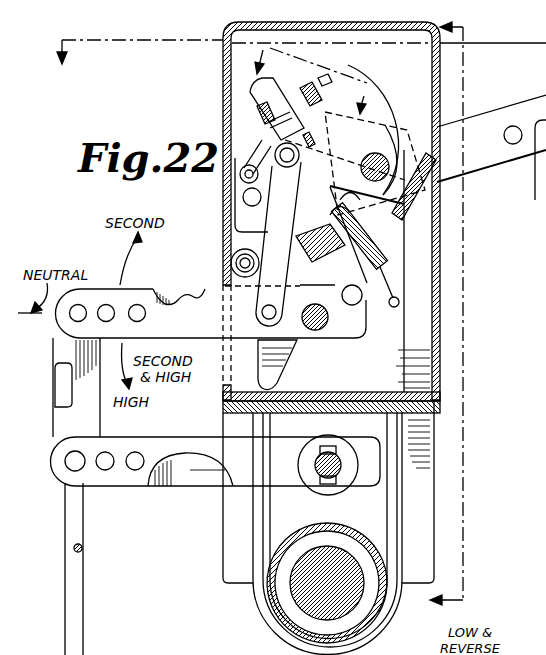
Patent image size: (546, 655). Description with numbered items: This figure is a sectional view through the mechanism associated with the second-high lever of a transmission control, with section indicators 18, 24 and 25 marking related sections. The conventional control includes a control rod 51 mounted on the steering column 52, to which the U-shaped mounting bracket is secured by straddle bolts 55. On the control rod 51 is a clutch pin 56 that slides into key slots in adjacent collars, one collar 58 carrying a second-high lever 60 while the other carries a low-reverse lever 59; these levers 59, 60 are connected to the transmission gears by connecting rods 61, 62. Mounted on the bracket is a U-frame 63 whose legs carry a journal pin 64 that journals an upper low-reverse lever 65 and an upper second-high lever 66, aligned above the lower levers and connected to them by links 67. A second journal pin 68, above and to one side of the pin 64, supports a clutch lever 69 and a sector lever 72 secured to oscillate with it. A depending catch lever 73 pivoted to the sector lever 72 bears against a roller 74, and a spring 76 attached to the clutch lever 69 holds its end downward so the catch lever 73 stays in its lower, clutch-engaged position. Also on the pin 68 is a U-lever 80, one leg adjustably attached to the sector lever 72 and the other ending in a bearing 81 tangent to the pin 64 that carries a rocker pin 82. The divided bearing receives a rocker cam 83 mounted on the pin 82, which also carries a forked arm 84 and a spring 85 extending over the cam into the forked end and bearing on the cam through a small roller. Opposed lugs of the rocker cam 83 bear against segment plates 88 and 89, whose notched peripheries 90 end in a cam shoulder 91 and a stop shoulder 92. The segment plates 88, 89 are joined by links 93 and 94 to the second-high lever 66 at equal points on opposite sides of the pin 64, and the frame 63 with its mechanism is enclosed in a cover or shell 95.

The section line 18 is at (465, 316).
The section line 24 is at (134, 66).
The section line 25 is at (317, 79).
The control rod 51 is at (338, 468).
The steering column 52 is at (267, 598).
The straddle bolts 55 is at (400, 492).
The clutch pin 56 is at (327, 483).
The collar 58 is at (357, 432).
The low-reverse lever 59 is at (200, 478).
The second-high lever 60 is at (205, 440).
The connecting rod 61 is at (78, 576).
The connecting rod 62 is at (76, 524).
The U-frame 63 is at (390, 364).
The journal pin 64 is at (317, 327).
The low-reverse lever 65 is at (173, 294).
The second-high lever 66 is at (140, 296).
The links 67 is at (63, 349).
The journal pin 68 is at (383, 150).
The clutch lever 69 is at (512, 118).
The sector lever 72 is at (242, 189).
The catch lever 73 is at (233, 216).
The roller 74 is at (231, 258).
The spring 76 is at (317, 261).
The U-lever 80 is at (404, 204).
The bearing 81 is at (326, 97).
The rocker pin 82 is at (315, 85).
The rocker cam 83 is at (248, 113).
The forked arm 84 is at (251, 88).
The spring 85 is at (246, 166).
The segment plate 88 is at (362, 211).
The segment plate 89 is at (366, 228).
The notched peripheries 90 is at (248, 137).
The cam shoulder 91 is at (310, 134).
The stop shoulder 92 is at (350, 68).
The link 93 is at (273, 239).
The link 94 is at (327, 262).
The cover or shell 95 is at (231, 33).